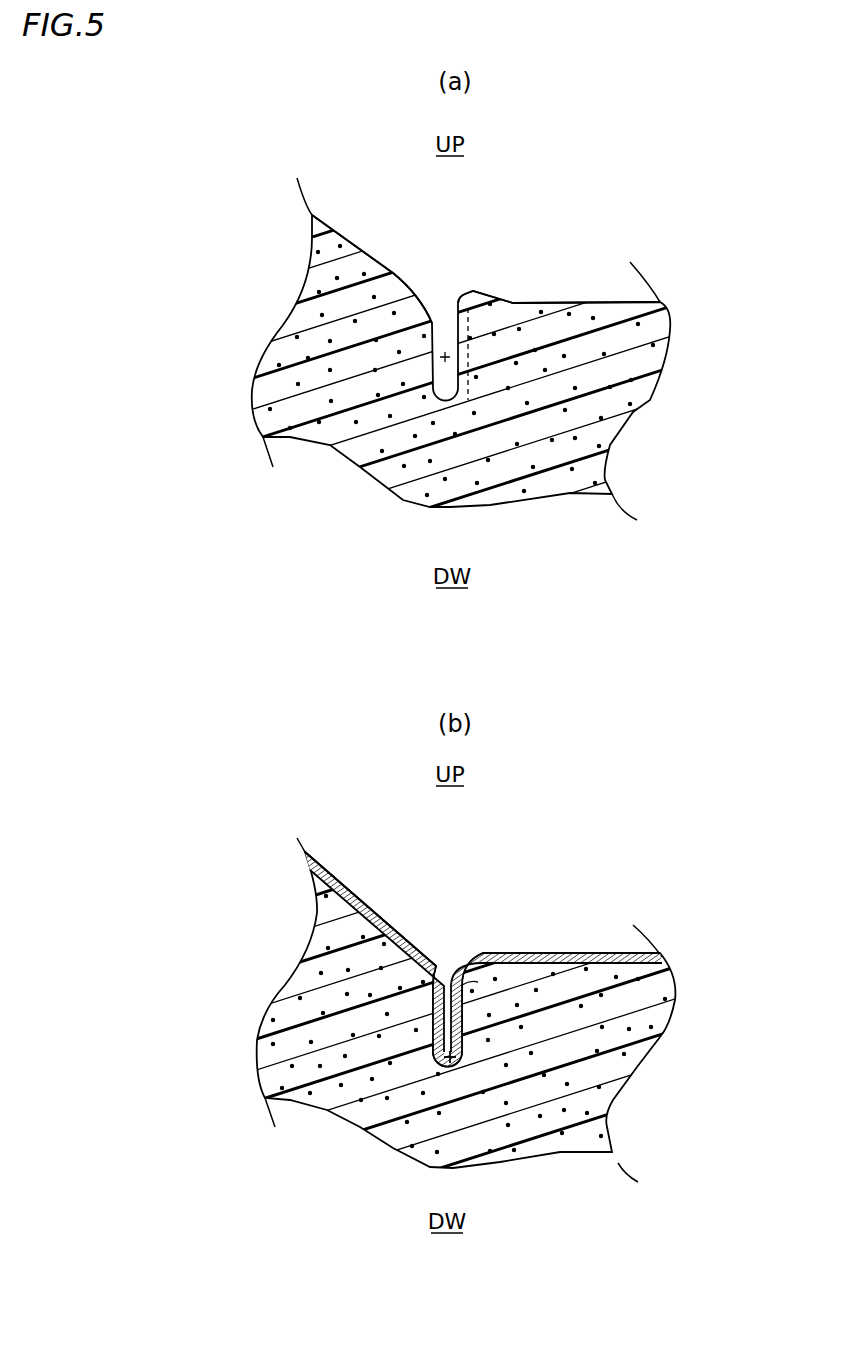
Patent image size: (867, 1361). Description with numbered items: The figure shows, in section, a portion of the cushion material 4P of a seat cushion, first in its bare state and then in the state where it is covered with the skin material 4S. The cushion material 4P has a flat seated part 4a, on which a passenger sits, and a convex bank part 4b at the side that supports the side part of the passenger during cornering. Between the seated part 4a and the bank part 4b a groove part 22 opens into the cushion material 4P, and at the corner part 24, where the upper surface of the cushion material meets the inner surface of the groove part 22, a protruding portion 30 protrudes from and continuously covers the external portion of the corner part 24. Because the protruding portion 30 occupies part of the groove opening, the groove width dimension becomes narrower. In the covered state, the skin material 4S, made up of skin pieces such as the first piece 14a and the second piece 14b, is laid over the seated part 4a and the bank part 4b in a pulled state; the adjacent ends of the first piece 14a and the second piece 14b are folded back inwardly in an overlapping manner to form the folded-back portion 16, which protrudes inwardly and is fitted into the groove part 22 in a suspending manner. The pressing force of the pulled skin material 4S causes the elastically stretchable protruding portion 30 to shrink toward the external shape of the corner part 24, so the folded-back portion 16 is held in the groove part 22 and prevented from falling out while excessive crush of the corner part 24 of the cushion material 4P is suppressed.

The cushion material 4P is at (603, 408).
The seated part 4a is at (578, 298).
The bank part 4b is at (344, 231).
The protruding portion 30 is at (463, 291).
The corner part 24 is at (475, 350).
The groove part 22 is at (443, 357).
The first piece 14a is at (497, 953).
The second piece 14b is at (377, 907).
The skin material 4S is at (483, 927).
The folded-back portion 16 is at (455, 1058).